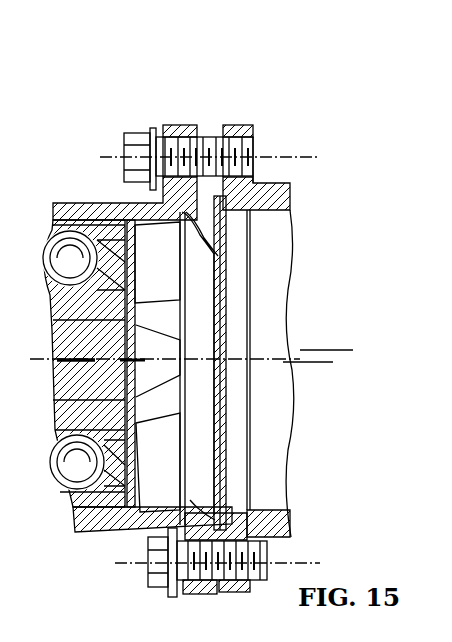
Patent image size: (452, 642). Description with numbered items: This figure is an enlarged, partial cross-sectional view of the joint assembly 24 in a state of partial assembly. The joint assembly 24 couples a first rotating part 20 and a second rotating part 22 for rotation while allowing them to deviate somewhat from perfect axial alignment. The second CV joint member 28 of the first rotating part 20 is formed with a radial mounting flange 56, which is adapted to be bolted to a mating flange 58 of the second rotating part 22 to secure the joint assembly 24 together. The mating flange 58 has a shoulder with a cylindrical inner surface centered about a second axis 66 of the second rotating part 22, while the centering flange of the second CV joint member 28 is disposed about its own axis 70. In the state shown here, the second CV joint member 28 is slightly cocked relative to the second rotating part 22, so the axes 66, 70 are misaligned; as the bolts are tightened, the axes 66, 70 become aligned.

The first rotating part 20 is at (60, 203).
The second rotating part 22 is at (278, 326).
The joint assembly 24 is at (184, 57).
The second CV joint member 28 is at (95, 205).
The radial mounting flange 56 is at (176, 125).
The mating flange 58 is at (242, 125).
The second axis 66 is at (313, 365).
The axis of the second CV joint member 70 is at (322, 350).